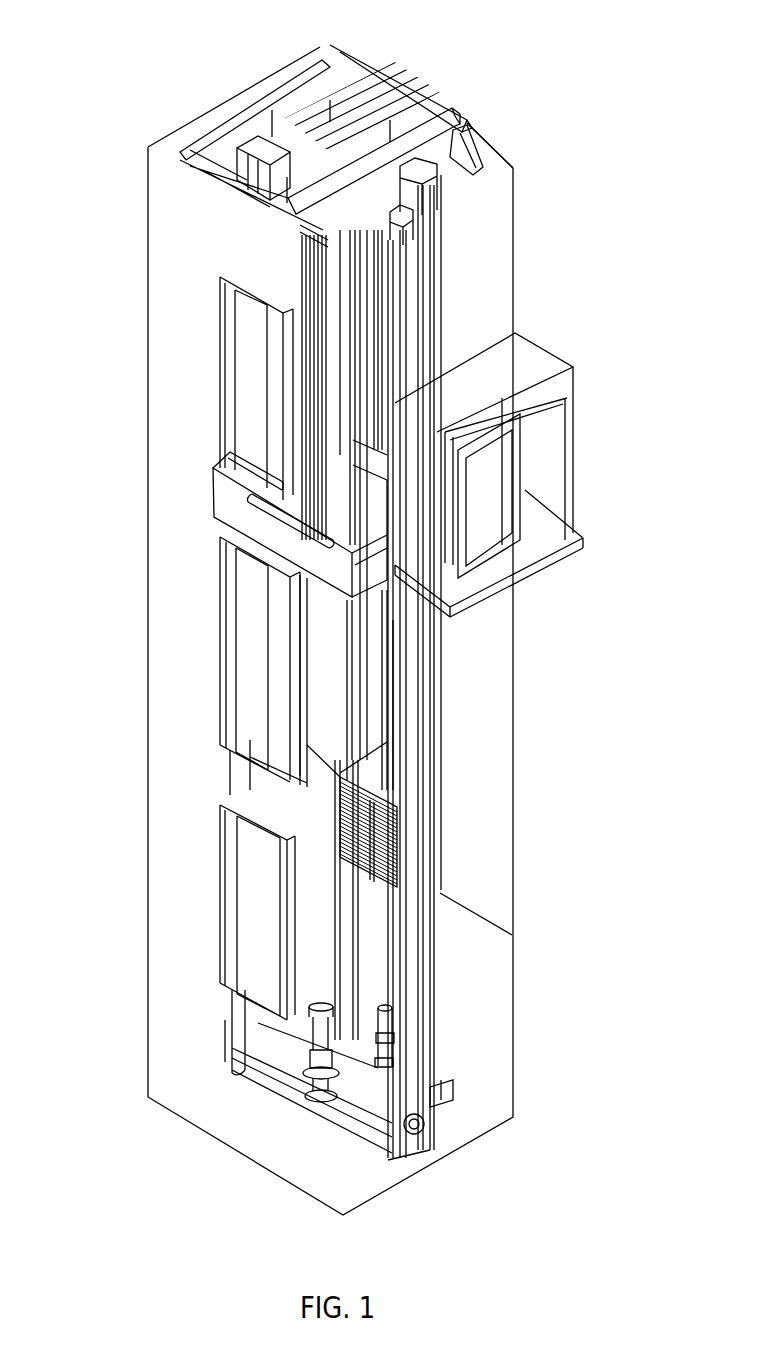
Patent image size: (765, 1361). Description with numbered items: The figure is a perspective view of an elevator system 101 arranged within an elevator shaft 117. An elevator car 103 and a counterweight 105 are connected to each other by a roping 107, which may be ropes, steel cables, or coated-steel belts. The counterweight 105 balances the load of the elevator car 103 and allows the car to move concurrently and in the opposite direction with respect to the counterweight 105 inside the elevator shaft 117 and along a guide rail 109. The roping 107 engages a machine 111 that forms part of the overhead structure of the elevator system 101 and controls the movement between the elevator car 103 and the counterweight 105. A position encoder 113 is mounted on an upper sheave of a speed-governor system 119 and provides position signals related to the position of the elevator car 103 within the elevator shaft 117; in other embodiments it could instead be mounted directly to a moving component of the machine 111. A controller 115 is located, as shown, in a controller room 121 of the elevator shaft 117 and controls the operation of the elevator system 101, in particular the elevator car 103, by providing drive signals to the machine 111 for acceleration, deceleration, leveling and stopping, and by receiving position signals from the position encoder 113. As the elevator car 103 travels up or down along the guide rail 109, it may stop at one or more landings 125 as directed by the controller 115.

The elevator system 101 is at (533, 102).
The elevator car 103 is at (337, 680).
The counterweight 105 is at (405, 848).
The roping 107 is at (340, 382).
The guide rail 109 is at (412, 775).
The machine 111 is at (250, 130).
The position encoder 113 is at (445, 205).
The controller 115 is at (515, 487).
The elevator shaft 117 is at (194, 767).
The speed-governor system 119 is at (432, 262).
The controller room 121 is at (575, 368).
The landings 125 is at (213, 363).